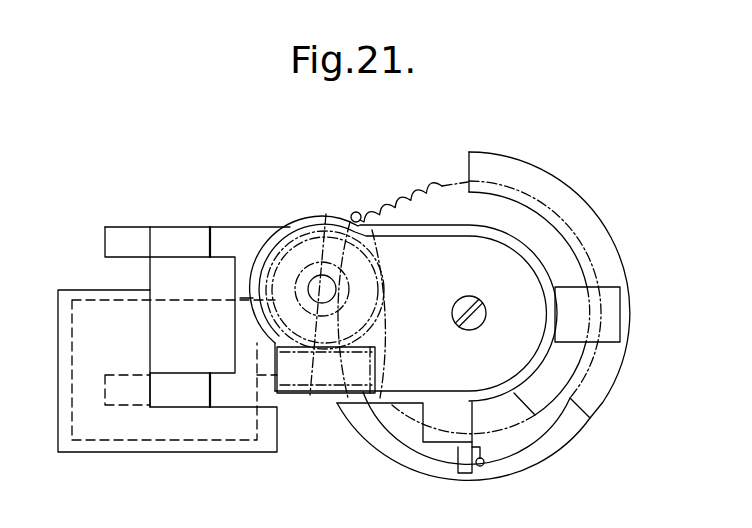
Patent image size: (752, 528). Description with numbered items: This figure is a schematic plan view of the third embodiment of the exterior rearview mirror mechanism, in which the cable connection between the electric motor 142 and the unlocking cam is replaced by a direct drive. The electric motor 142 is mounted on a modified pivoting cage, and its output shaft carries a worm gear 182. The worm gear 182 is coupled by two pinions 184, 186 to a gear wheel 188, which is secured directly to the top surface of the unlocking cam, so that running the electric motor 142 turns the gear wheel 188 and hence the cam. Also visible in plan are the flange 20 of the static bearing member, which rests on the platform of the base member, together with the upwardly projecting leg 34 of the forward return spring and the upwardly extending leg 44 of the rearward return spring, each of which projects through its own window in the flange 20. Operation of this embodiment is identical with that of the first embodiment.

The flange 20 is at (566, 196).
The upwardly projecting leg 34 is at (358, 213).
The upwardly extending leg 44 is at (484, 464).
The electric motor 142 is at (95, 427).
The worm gear 182 is at (306, 395).
The pinion 184 is at (268, 257).
The pinion 186 is at (326, 214).
The gear wheel 188 is at (425, 185).